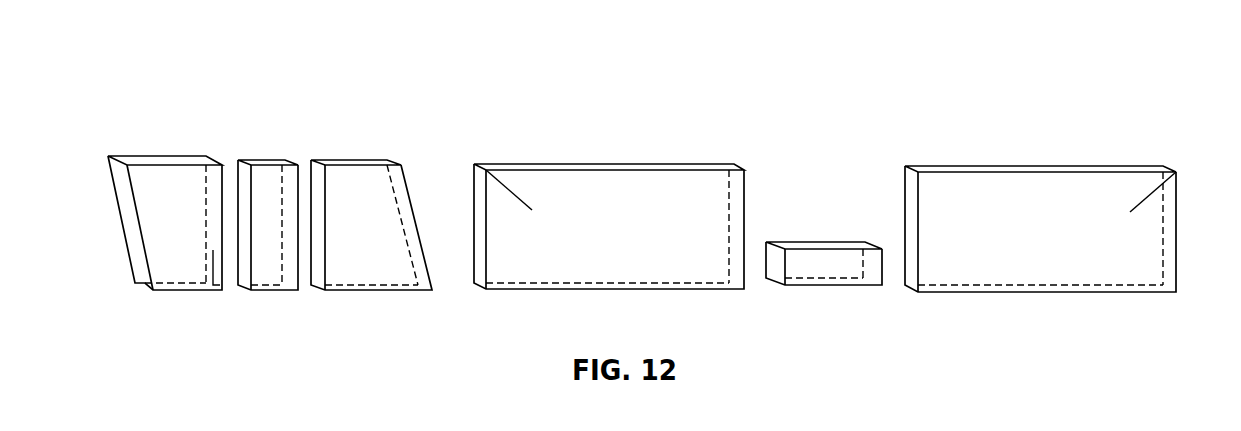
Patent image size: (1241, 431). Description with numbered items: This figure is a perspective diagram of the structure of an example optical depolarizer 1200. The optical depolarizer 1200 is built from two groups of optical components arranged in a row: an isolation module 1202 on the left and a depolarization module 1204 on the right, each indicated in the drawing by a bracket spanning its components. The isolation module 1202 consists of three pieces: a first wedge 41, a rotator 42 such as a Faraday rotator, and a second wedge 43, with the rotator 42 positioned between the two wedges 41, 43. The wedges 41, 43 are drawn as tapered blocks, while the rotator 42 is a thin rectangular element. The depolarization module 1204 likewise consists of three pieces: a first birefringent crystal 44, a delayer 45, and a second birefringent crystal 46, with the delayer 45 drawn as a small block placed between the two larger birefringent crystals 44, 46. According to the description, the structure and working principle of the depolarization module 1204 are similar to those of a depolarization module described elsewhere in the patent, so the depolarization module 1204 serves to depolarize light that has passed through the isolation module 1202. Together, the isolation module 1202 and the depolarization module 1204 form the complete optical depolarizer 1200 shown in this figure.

The optical depolarizer 1200 is at (118, 80).
The isolation module 1202 is at (402, 140).
The depolarization module 1204 is at (1183, 142).
The wedge 41 is at (137, 232).
The rotator 42 is at (270, 287).
The wedge 43 is at (367, 287).
The birefringent crystal 44 is at (602, 287).
The delayer 45 is at (832, 281).
The birefringent crystal 46 is at (978, 288).